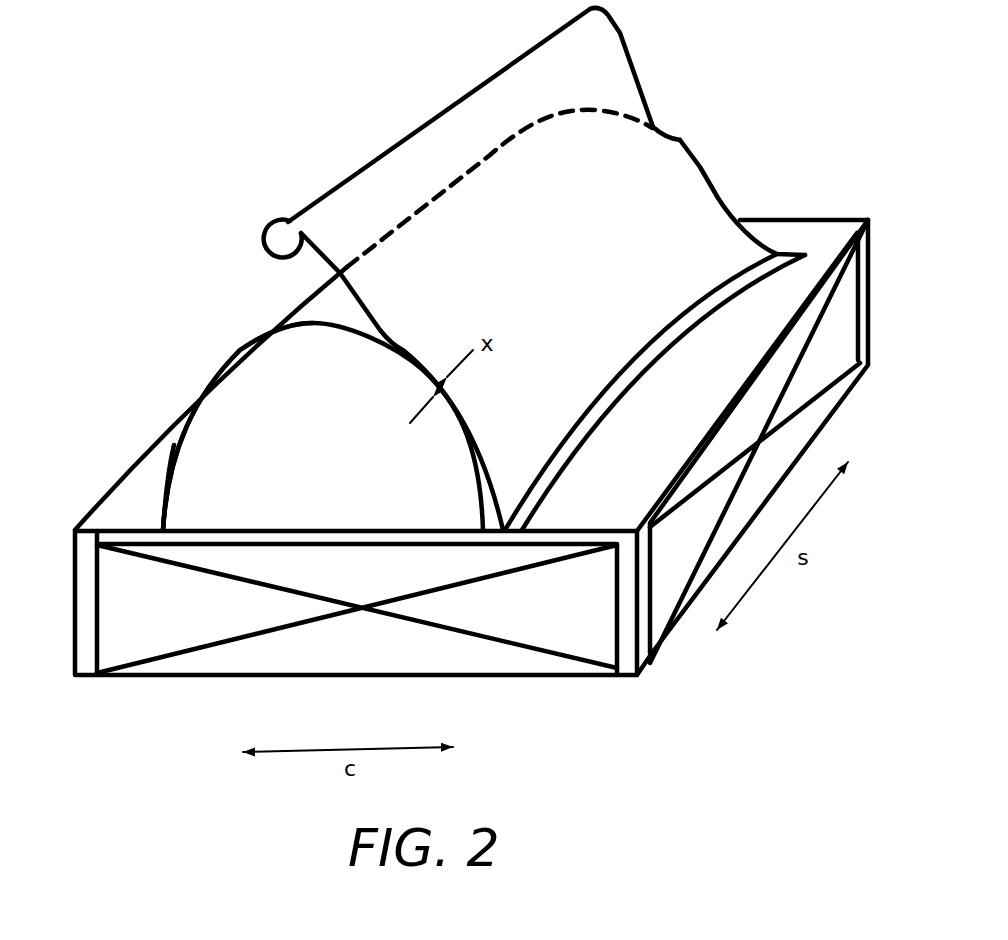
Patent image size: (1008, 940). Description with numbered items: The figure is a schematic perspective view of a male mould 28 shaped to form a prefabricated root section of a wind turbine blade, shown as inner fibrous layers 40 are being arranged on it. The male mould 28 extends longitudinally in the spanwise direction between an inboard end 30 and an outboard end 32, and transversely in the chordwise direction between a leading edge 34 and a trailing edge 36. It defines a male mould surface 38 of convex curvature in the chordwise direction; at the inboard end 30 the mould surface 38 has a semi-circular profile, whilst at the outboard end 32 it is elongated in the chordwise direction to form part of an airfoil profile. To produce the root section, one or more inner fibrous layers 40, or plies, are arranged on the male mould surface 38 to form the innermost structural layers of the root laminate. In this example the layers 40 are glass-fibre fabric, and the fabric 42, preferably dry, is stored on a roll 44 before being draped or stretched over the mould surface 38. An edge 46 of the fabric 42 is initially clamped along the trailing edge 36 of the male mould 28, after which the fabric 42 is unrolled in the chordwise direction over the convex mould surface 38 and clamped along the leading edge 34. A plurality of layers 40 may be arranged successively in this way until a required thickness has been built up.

The male mould 28 is at (342, 507).
The inboard end 30 is at (197, 367).
The outboard end 32 is at (685, 133).
The leading edge 34 is at (160, 507).
The trailing edge 36 is at (603, 402).
The male mould surface 38 is at (327, 307).
The inner fibrous layers 40 is at (703, 226).
The fabric 42 is at (618, 88).
The roll 44 is at (337, 160).
The edge of the fabric 46 is at (685, 335).